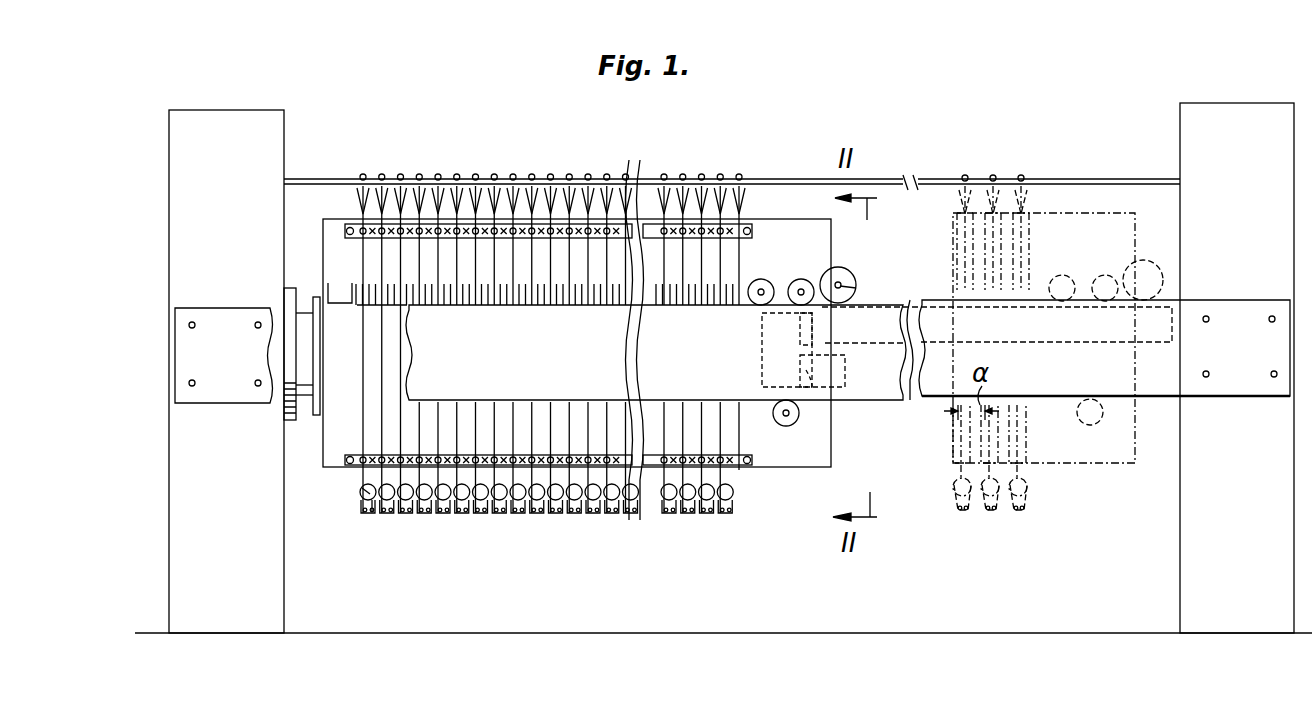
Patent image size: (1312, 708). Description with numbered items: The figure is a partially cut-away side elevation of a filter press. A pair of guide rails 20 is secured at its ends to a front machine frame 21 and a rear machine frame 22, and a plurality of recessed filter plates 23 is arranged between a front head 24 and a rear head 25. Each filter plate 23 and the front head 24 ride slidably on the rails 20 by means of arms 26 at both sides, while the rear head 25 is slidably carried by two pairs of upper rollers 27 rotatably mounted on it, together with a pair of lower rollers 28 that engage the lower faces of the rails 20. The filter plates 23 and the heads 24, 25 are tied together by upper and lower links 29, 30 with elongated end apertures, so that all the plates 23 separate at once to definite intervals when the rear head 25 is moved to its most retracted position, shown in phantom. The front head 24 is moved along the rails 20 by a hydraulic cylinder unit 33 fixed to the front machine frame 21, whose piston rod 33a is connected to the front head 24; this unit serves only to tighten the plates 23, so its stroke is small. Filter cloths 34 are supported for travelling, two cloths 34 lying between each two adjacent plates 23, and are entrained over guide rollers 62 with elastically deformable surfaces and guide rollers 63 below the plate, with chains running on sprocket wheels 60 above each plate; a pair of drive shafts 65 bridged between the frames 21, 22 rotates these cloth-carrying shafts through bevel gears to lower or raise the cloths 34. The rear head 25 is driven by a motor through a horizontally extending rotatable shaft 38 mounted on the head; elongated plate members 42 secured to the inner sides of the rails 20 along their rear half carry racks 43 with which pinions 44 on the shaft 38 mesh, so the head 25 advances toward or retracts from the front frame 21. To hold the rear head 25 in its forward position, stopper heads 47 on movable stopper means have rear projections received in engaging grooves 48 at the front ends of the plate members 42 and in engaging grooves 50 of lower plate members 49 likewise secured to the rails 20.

The guide rails 20 is at (553, 500).
The front machine frame 21 is at (221, 118).
The rear machine frame 22 is at (1222, 125).
The recessed filter plates 23 is at (463, 252).
The front head 24 is at (333, 230).
The rear head 25 is at (810, 230).
The arms 26 is at (342, 290).
The upper rollers 27 is at (760, 279).
The lower rollers 28 is at (786, 426).
The upper links 29 is at (425, 236).
The lower links 30 is at (632, 492).
The hydraulic cylinder unit 33 is at (285, 297).
The piston rod 33a is at (303, 385).
The filter cloths 34 is at (488, 506).
The rotatable shaft 38 is at (841, 288).
The elongated plate members 42 is at (1180, 300).
The racks 43 is at (1080, 307).
The pinions 44 is at (856, 288).
The stopper heads 47 is at (782, 358).
The engaging grooves 48 is at (812, 330).
The lower plate members 49 is at (845, 378).
The engaging grooves 50 is at (812, 380).
The sprocket wheels 60 is at (382, 176).
The guide rollers 62 is at (366, 494).
The guide rollers 63 is at (374, 502).
The drive shafts 65 is at (653, 172).